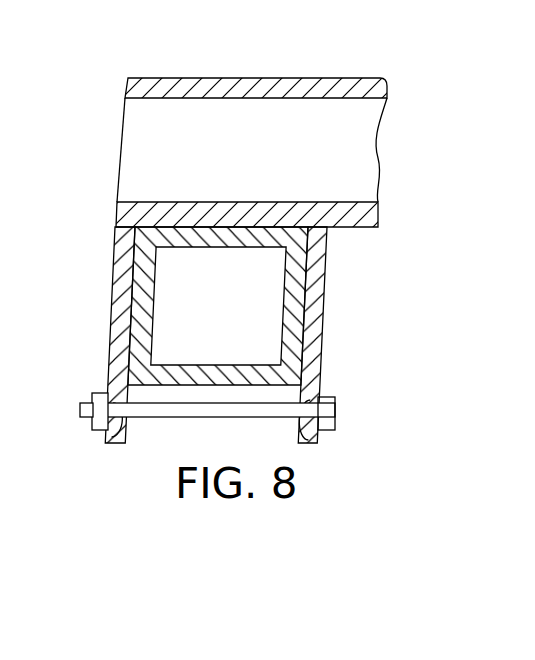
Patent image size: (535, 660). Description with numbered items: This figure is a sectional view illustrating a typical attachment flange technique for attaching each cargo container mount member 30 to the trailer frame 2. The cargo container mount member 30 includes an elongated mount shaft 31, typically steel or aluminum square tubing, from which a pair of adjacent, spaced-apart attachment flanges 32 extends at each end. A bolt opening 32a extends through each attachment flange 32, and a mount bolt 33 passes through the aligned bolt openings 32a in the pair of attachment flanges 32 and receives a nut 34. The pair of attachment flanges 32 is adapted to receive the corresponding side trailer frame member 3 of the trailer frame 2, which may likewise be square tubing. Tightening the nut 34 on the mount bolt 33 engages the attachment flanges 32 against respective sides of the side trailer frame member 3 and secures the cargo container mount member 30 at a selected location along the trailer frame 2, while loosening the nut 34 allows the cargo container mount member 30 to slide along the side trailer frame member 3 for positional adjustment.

The trailer frame 2 is at (212, 369).
The side trailer frame member 3 is at (143, 333).
The cargo container mount member 30 is at (251, 121).
The mount shaft 31 is at (322, 90).
The attachment flange 32 is at (122, 358).
The bolt opening 32a is at (135, 440).
The mount bolt 33 is at (212, 415).
The nut 34 is at (97, 432).